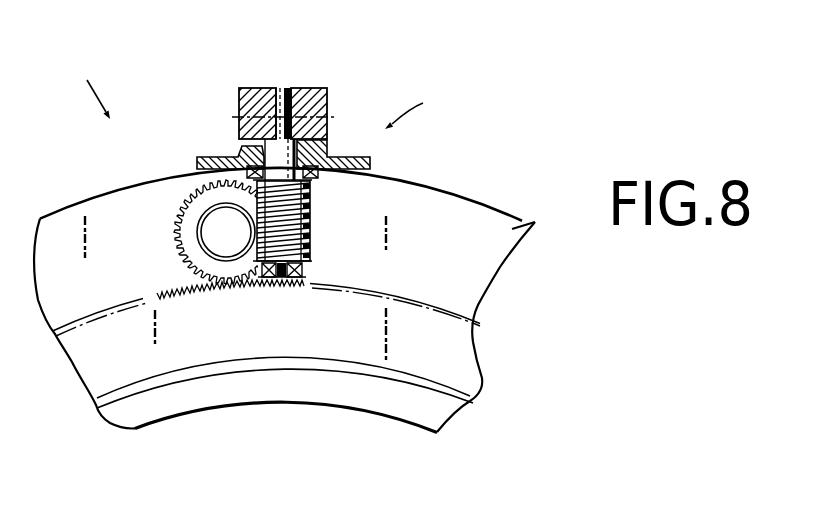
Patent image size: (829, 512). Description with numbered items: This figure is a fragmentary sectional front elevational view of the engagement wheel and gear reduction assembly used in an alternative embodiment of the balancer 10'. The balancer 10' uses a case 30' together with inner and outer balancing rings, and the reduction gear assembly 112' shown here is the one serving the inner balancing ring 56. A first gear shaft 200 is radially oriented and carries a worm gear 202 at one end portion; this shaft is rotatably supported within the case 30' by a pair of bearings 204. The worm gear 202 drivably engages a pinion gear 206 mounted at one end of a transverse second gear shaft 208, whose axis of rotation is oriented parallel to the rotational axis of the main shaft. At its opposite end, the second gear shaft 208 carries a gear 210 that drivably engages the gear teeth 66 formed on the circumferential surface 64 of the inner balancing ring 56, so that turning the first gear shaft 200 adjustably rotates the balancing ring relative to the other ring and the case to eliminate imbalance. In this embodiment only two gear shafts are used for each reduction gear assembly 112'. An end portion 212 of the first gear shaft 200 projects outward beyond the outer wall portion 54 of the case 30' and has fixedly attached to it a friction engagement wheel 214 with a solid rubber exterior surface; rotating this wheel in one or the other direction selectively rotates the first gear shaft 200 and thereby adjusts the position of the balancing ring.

The balancer 10' is at (87, 87).
The case 30' is at (293, 295).
The outer wall portion 54 is at (524, 218).
The inner balancing ring 56 is at (470, 363).
The circumferential surface 64 is at (342, 283).
The gear teeth 66 is at (263, 287).
The reduction gear assembly 112' is at (421, 108).
The first gear shaft 200 is at (327, 148).
The worm gear 202 is at (310, 230).
The bearings 204 is at (316, 178).
The pinion gear 206 is at (228, 257).
The second gear shaft 208 is at (212, 229).
The gear 210 is at (195, 195).
The end portion 212 is at (288, 90).
The friction engagement wheel 214 is at (261, 88).